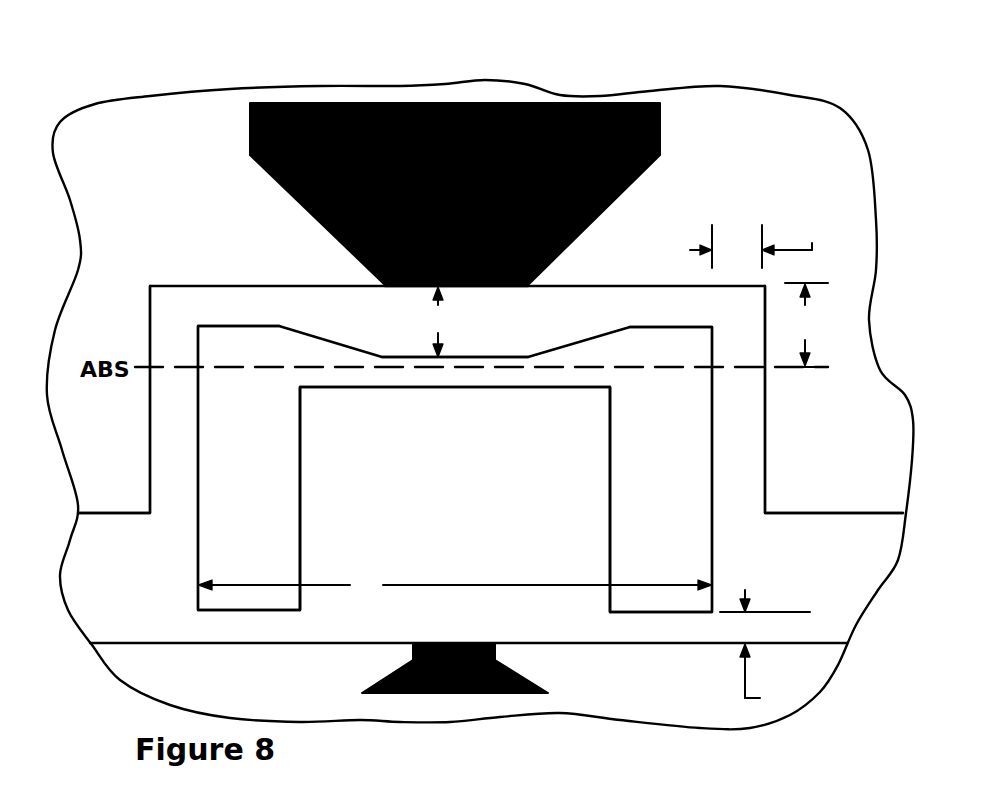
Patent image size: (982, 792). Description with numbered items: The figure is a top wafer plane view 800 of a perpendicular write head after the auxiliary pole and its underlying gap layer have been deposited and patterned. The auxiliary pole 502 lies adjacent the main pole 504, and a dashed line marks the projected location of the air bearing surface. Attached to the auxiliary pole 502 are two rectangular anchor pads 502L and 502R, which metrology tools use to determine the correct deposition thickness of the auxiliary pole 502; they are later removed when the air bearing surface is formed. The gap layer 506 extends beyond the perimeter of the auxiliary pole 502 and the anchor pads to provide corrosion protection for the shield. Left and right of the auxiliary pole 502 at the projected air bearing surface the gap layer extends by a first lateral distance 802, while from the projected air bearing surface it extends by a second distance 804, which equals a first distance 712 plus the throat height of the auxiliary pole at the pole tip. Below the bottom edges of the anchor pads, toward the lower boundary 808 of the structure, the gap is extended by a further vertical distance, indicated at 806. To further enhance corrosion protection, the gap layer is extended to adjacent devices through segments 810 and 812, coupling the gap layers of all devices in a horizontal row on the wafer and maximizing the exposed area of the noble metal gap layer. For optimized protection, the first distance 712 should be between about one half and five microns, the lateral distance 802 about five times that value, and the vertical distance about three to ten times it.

The top wafer plane view 800 is at (787, 95).
The write pole 504 is at (455, 194).
The auxiliary pole 502 is at (250, 347).
The anchor pad 502L is at (249, 468).
The anchor pad 502R is at (661, 469).
The gap layer 506 is at (455, 499).
The distance L1 712 is at (415, 313).
The distance X 802 is at (815, 213).
The distance L2 804 is at (830, 322).
The substrate / leading layer 806 is at (788, 712).
The return pole stud 808 is at (362, 605).
The segment 810 is at (114, 442).
The segment 812 is at (834, 432).